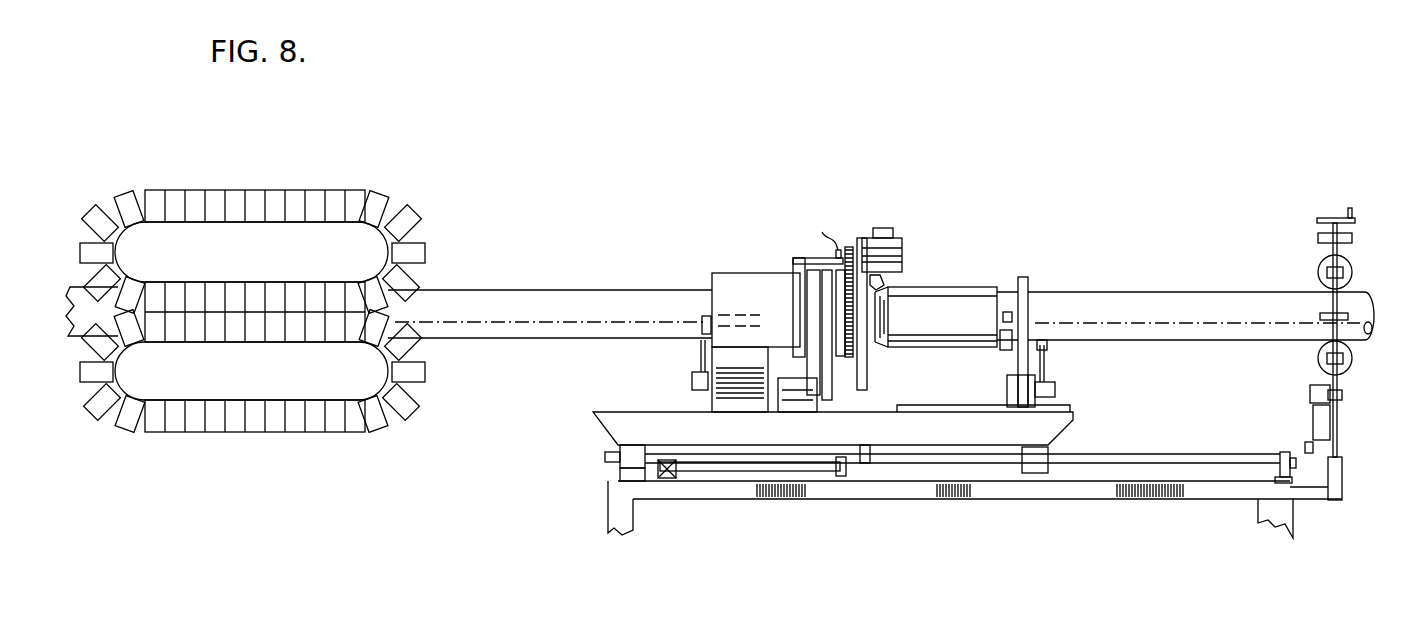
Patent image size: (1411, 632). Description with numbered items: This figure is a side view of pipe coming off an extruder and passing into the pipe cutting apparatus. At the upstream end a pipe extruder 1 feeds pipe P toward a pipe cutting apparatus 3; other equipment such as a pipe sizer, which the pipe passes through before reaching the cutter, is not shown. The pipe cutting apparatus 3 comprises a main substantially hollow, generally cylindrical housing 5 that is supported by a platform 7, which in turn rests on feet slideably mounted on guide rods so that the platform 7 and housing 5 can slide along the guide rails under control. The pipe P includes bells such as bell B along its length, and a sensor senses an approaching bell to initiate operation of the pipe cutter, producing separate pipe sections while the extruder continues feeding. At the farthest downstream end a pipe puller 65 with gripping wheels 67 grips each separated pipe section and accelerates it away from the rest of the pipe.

The pipe extruder 1 is at (153, 165).
The pipe P is at (610, 303).
The main housing 5 is at (736, 284).
The bell B is at (946, 287).
The pipe cutting apparatus 3 is at (1003, 246).
The platform 7 is at (626, 410).
The pipe puller 65 is at (1330, 218).
The gripping wheels 67 is at (1352, 275).